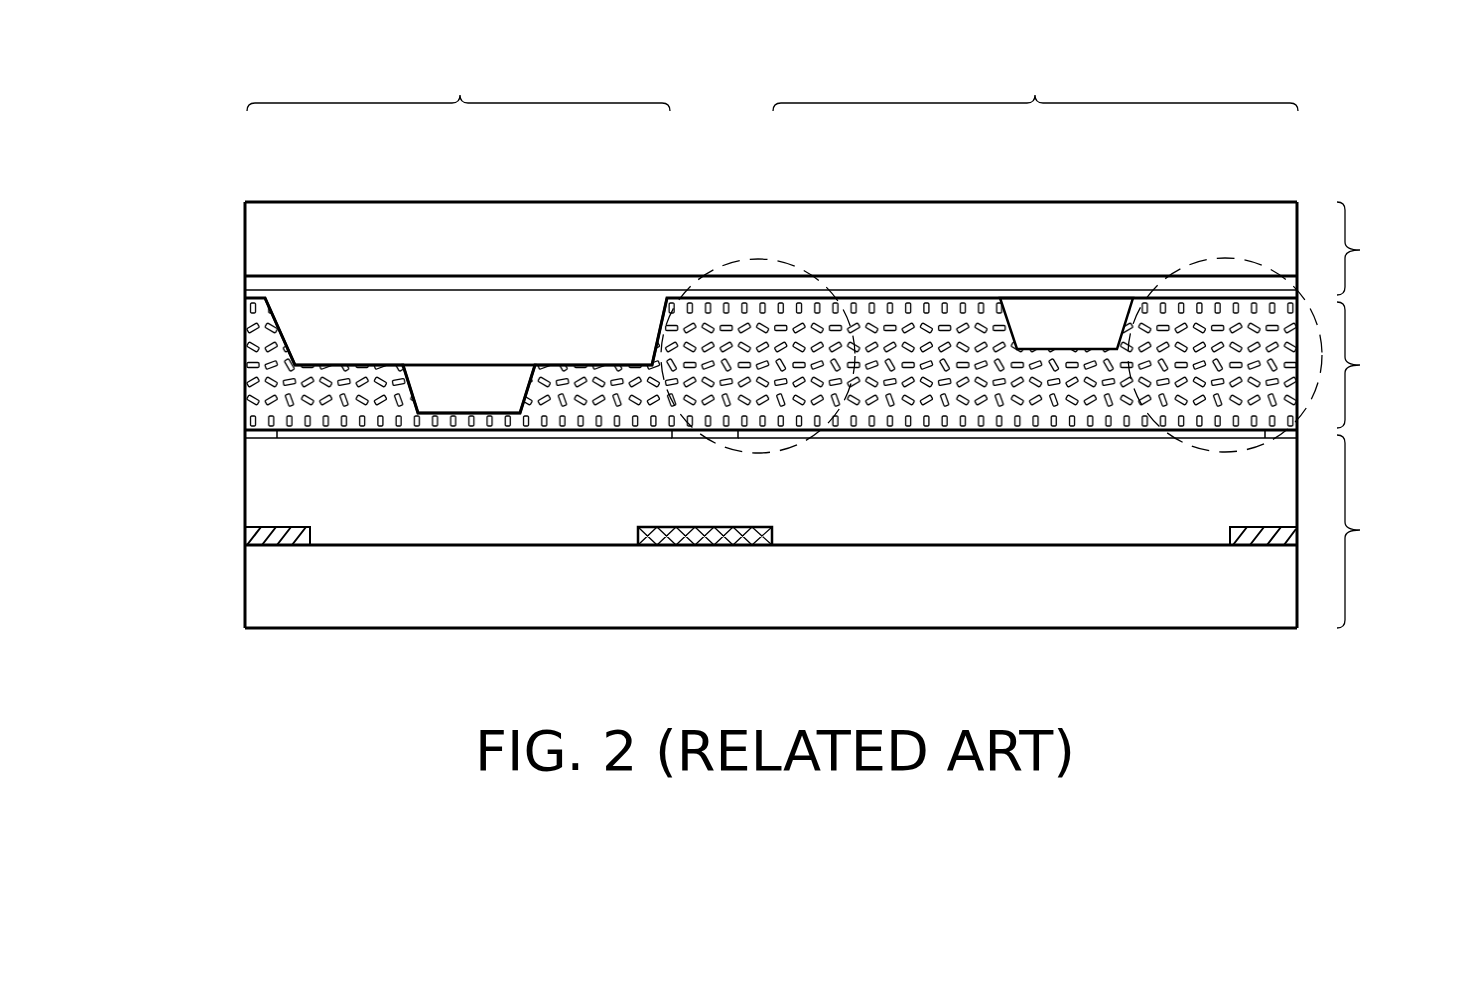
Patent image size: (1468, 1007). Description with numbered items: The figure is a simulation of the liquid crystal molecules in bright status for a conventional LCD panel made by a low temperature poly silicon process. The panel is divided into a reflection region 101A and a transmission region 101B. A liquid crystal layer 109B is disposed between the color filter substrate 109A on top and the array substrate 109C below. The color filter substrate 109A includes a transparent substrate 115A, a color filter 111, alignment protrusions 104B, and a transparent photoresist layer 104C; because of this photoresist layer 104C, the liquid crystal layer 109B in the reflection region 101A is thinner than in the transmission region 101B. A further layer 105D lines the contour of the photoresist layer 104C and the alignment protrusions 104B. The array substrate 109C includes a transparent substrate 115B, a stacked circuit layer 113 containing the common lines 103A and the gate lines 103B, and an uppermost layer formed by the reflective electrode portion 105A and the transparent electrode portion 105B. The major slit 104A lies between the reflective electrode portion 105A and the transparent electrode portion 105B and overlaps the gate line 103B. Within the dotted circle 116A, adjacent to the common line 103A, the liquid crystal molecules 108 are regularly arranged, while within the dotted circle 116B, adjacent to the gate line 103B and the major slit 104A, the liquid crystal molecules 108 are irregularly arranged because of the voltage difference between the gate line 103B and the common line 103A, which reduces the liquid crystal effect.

The reflection region 101A is at (458, 82).
The transmission region 101B is at (1035, 82).
The common line 103A is at (255, 535).
The gate line 103B is at (700, 546).
The major slit 104A is at (718, 435).
The alignment protrusion 104B is at (474, 380).
The transparent photoresist layer 104C is at (375, 320).
The reflective electrode portion 105A is at (250, 430).
The transparent electrode portion 105B is at (937, 432).
The second alignment layer 105D is at (245, 310).
The liquid crystal molecules 108 is at (1065, 388).
The color filter substrate 109A is at (1391, 248).
The liquid crystal layer 109B is at (1391, 365).
The array substrate 109C is at (1391, 531).
The color filter 111 is at (257, 278).
The stacked circuit layer 113 is at (257, 477).
The transparent substrate 115A is at (257, 233).
The transparent substrate 115B is at (257, 593).
The dotted circle 116A is at (1220, 260).
The dotted circle 116B is at (787, 258).